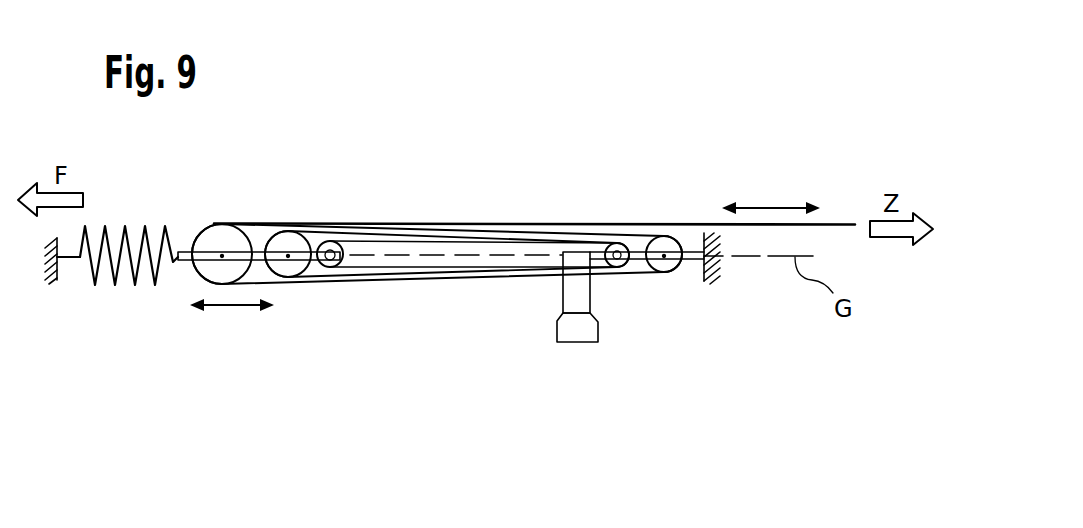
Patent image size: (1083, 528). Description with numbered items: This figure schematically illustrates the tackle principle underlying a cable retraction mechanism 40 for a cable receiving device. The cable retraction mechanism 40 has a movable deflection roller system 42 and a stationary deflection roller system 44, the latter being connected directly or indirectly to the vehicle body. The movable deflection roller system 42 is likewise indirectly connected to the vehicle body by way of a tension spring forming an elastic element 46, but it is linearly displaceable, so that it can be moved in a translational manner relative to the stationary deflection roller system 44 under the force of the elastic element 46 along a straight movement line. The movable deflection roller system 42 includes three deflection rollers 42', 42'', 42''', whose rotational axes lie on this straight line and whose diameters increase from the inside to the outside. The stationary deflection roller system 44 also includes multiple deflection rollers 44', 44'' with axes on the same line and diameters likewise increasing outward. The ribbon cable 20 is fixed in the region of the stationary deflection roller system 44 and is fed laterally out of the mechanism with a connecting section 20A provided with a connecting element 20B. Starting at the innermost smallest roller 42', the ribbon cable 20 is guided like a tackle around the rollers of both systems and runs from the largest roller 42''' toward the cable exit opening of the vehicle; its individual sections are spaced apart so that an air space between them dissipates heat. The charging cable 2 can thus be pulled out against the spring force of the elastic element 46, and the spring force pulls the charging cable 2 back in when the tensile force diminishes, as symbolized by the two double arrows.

The charging cable 2 is at (527, 210).
The ribbon cable 20 is at (416, 222).
The connecting section 20A is at (572, 296).
The connecting element 20B is at (578, 330).
The cable retraction mechanism 40 is at (476, 192).
The movable deflection roller system 42 is at (436, 291).
The innermost smallest deflection roller 42' is at (346, 202).
The deflection roller 42'' is at (287, 207).
The largest deflection roller 42''' is at (222, 210).
The stationary deflection roller system 44 is at (542, 284).
The deflection roller 44' is at (608, 202).
The deflection roller 44'' is at (676, 204).
The elastic element 46 is at (121, 290).